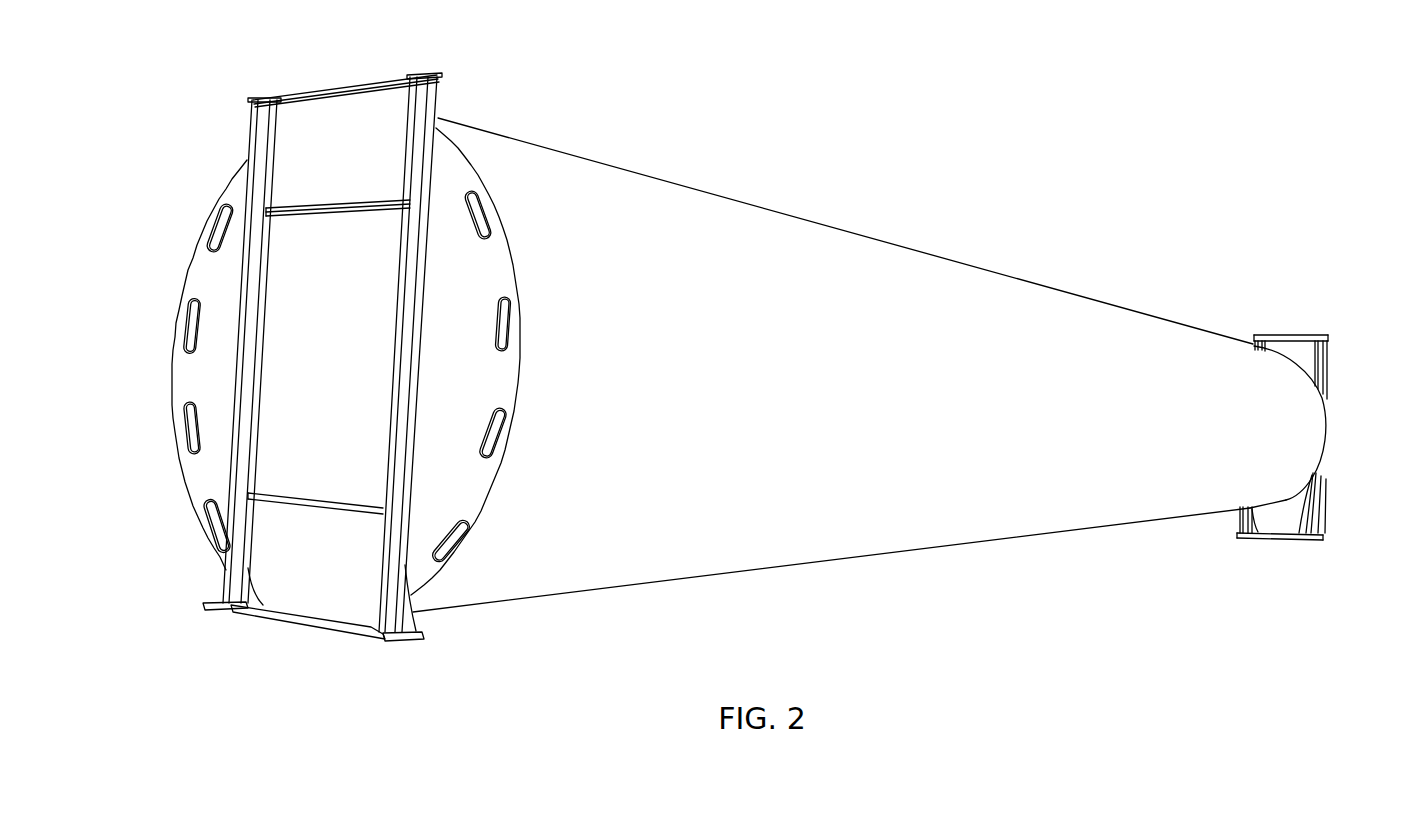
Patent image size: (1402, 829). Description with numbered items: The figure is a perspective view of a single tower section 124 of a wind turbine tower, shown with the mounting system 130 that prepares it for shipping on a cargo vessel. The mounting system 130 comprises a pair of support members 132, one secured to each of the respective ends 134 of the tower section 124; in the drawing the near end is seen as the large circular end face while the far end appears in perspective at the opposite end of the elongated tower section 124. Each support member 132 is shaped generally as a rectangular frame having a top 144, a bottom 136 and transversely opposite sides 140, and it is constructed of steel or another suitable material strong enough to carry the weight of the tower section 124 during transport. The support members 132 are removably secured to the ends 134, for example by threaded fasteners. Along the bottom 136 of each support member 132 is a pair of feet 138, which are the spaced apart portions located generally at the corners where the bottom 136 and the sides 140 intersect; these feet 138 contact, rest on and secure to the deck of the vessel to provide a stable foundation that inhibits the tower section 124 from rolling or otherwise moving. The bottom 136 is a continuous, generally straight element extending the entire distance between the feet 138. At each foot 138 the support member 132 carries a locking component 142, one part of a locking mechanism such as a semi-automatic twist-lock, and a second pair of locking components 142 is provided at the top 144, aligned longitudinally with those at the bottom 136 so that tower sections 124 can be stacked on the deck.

The tower section 124 is at (843, 250).
The mounting system 130 is at (430, 674).
The support member 132 is at (440, 96).
The end 134 is at (463, 176).
The bottom 136 is at (313, 602).
The foot 138 is at (217, 593).
The side 140 is at (238, 387).
The locking component 142 is at (224, 609).
The top 144 is at (338, 110).